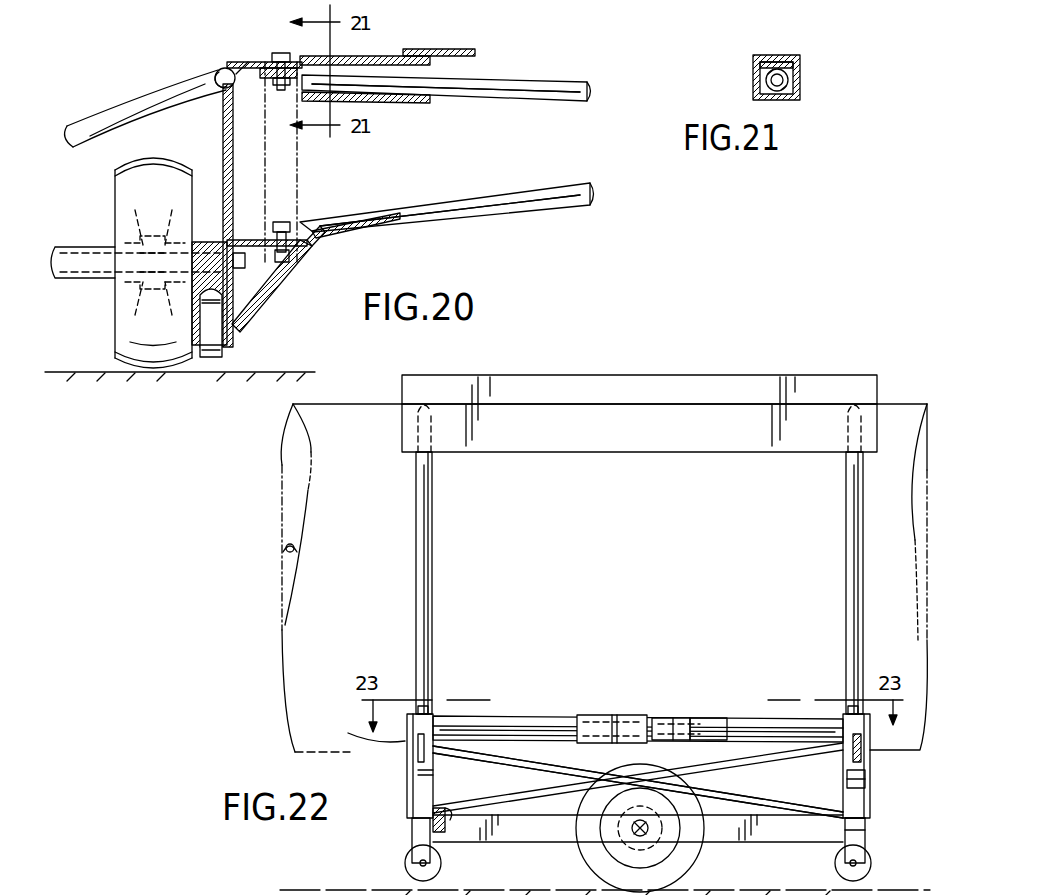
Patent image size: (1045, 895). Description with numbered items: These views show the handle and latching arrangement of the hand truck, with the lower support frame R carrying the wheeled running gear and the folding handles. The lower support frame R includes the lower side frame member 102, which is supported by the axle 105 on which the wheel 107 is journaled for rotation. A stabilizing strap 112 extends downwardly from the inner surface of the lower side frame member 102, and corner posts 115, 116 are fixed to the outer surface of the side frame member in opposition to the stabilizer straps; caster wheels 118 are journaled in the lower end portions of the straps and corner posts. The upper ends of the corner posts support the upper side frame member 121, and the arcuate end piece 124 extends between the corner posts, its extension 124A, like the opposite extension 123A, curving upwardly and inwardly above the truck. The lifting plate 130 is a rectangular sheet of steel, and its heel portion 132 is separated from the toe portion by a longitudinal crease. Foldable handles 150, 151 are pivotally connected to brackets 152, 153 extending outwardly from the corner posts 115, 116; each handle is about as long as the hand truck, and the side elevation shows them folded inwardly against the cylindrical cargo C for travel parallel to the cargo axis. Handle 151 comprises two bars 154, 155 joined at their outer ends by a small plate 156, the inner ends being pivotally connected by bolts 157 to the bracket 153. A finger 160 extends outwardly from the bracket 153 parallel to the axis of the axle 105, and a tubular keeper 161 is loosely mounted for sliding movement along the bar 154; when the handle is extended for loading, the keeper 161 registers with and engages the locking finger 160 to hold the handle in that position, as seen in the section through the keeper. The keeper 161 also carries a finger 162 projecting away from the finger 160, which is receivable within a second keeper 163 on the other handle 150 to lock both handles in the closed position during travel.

In FIG. 20, the lower side frame member 102 is at (205, 243).
In FIG. 22, the lower side frame member 102 is at (520, 843).
In FIG. 20, the axle 105 is at (62, 247).
In FIG. 22, the axle 105 is at (633, 833).
In FIG. 20, the wheel 107 is at (120, 181).
In FIG. 22, the wheel 107 is at (695, 855).
In FIG. 20, the stabilizing strap 112 is at (228, 290).
In FIG. 22, the corner post 115 is at (858, 792).
In FIG. 20, the corner post 116 is at (222, 130).
In FIG. 22, the corner post 116 is at (418, 775).
In FIG. 20, the caster wheel 118 is at (213, 358).
In FIG. 22, the caster wheel 118 is at (409, 866).
In FIG. 20, the upper side frame member 121 is at (215, 74).
In FIG. 20, the arcuate end piece 124 is at (110, 126).
In FIG. 22, the extension of arcuate end piece 124A is at (432, 523).
In FIG. 22, the extension of arcuate end piece 123A is at (846, 520).
In FIG. 22, the lifting plate 130 is at (715, 385).
In FIG. 22, the heel portion 132 is at (681, 455).
In FIG. 22, the foldable handle 150 is at (800, 706).
In FIG. 20, the foldable handle 151 is at (546, 98).
In FIG. 22, the foldable handle 151 is at (506, 715).
In FIG. 22, the bracket 152 is at (860, 828).
In FIG. 20, the bracket 153 is at (246, 62).
In FIG. 22, the bracket 153 is at (446, 812).
In FIG. 20, the bar 154 is at (495, 76).
In FIG. 21, the bar 154 is at (768, 81).
In FIG. 22, the bar 154 is at (540, 722).
In FIG. 20, the bar 155 is at (458, 196).
In FIG. 22, the bar 155 is at (792, 768).
In FIG. 22, the small plate 156 is at (861, 760).
In FIG. 20, the bolt 157 is at (277, 53).
In FIG. 20, the finger 160 is at (299, 62).
In FIG. 21, the finger 160 is at (766, 61).
In FIG. 20, the tubular keeper 161 is at (373, 56).
In FIG. 21, the tubular keeper 161 is at (800, 64).
In FIG. 22, the tubular keeper 161 is at (605, 718).
In FIG. 20, the finger 162 is at (462, 49).
In FIG. 22, the finger 162 is at (668, 718).
In FIG. 22, the second keeper 163 is at (712, 716).
In FIG. 22, the roll core C is at (281, 532).
In FIG. 20, the lower support frame R is at (241, 333).
In FIG. 22, the lower support frame R is at (402, 834).